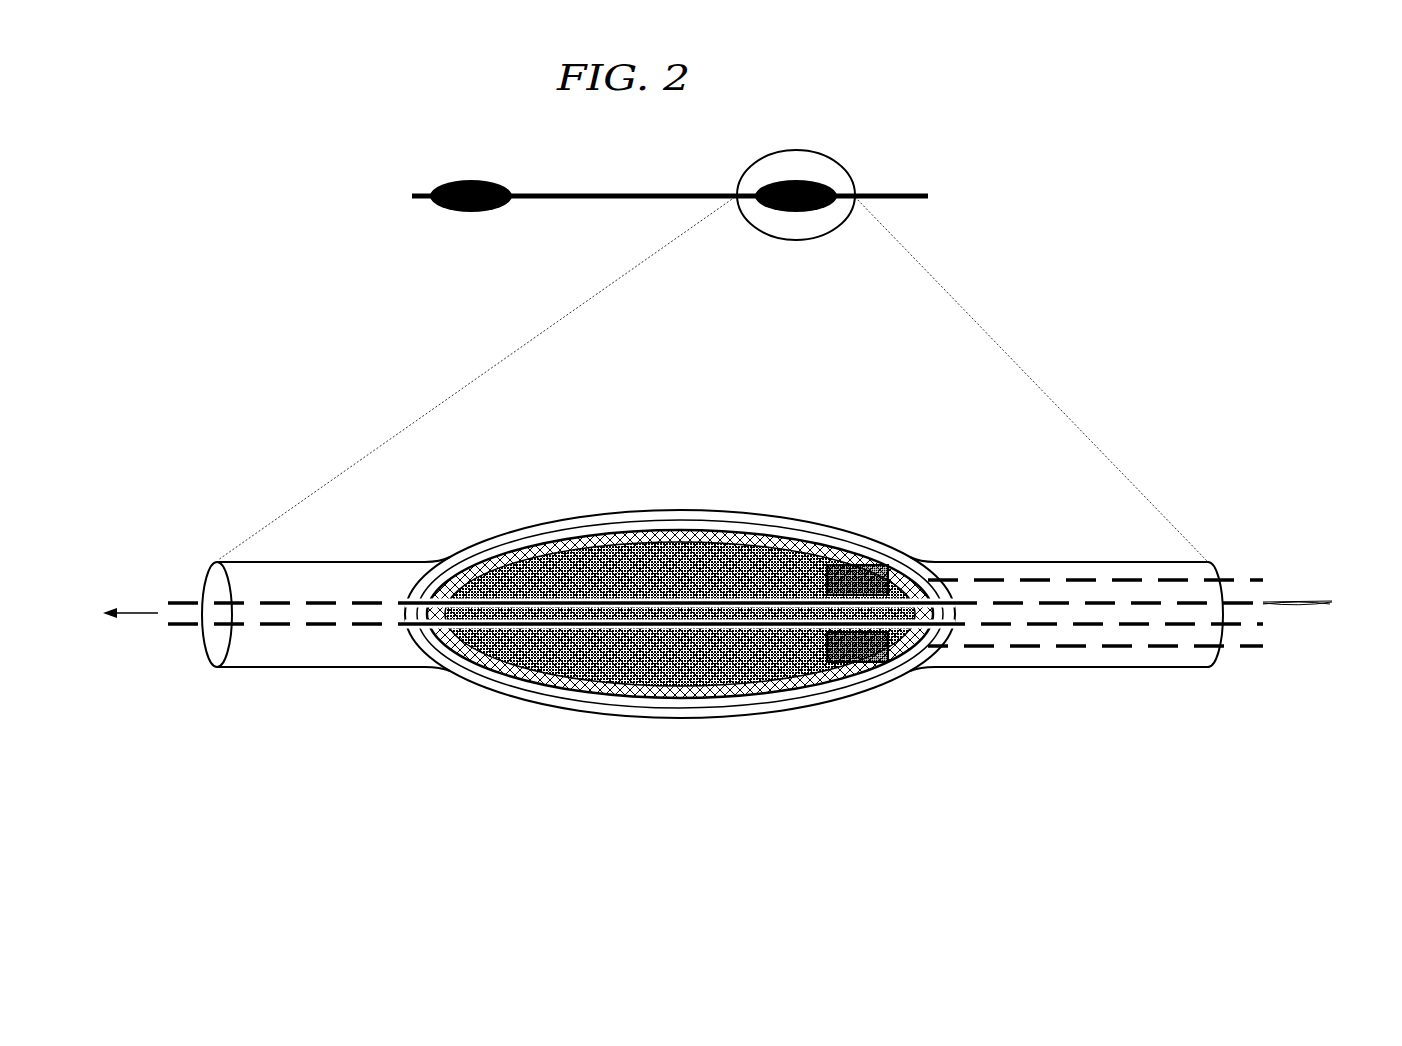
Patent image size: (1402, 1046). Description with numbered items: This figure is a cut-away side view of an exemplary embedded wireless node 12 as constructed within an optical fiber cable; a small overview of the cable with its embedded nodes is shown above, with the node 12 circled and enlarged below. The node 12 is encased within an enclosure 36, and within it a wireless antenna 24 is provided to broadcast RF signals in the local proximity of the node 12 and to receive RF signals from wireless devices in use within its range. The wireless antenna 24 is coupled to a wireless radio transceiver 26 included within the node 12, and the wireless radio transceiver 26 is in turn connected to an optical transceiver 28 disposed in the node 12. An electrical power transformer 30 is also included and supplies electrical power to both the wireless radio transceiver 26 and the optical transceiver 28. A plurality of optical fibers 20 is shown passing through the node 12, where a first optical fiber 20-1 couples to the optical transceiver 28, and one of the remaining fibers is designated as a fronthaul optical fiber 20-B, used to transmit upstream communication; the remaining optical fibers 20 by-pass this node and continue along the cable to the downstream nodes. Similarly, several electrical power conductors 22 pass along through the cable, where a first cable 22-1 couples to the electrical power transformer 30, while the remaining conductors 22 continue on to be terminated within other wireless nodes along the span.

The embedded wireless node 12 is at (822, 167).
The plurality of optical fibers 20 is at (1066, 570).
The fronthaul optical fiber 20-B is at (185, 597).
The first optical fiber 20-1 is at (1240, 563).
The electrical power conductors 22 is at (185, 628).
The first cable 22-1 is at (1240, 665).
The wireless antenna 24 is at (504, 540).
The wireless radio transceiver 26 is at (562, 668).
The optical transceiver 28 is at (866, 567).
The electrical power transformer 30 is at (872, 665).
The enclosure 36 is at (680, 711).